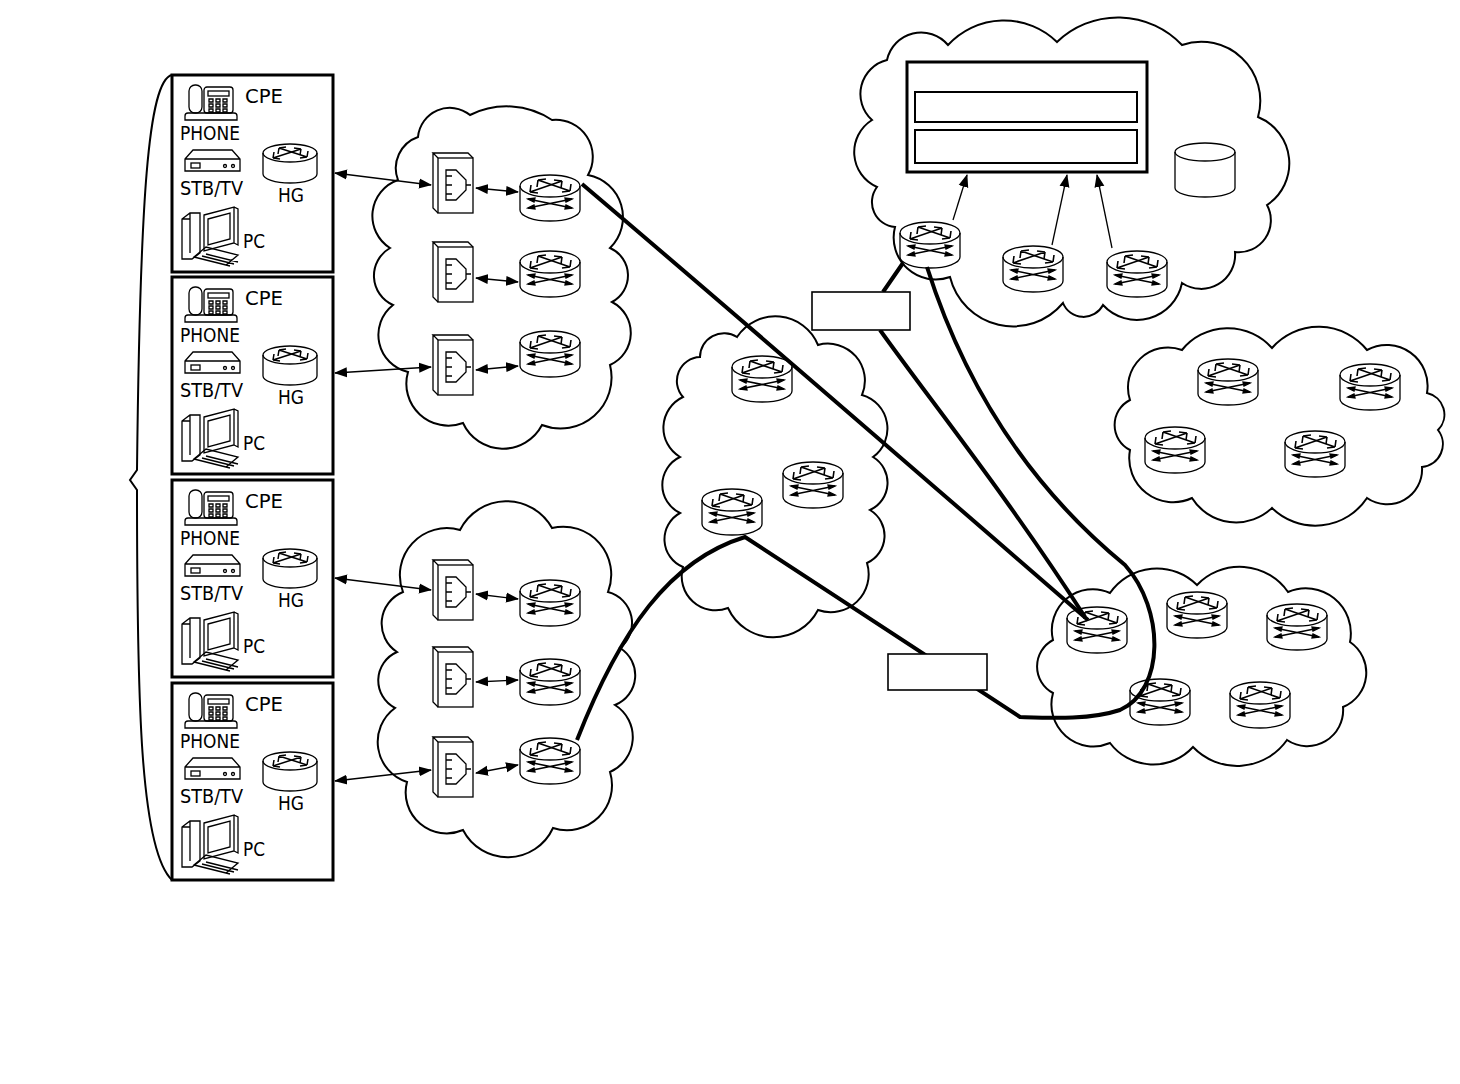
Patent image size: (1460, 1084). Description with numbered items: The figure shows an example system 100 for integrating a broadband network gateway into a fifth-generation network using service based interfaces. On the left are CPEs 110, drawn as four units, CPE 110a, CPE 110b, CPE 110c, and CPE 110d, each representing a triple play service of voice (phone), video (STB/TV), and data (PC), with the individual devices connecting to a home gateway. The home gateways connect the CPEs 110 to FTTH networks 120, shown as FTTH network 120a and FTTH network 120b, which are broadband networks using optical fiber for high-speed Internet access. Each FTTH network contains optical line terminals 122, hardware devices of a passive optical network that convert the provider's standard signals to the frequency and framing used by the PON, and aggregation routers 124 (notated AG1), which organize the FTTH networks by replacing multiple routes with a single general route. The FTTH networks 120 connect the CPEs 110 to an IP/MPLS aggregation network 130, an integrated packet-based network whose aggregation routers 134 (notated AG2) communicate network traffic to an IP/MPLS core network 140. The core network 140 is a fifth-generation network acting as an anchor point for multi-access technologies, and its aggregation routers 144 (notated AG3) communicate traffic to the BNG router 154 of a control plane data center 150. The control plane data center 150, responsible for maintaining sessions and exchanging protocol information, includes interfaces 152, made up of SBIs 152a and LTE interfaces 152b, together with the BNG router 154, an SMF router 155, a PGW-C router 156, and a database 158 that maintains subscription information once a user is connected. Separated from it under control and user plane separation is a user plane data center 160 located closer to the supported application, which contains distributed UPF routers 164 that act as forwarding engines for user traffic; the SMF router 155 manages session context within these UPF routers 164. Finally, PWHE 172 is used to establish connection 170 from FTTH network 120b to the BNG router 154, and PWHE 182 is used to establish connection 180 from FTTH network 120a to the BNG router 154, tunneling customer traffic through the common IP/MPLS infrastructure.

The system 100 is at (1302, 122).
The CPEs 110 is at (206, 477).
The CPE 110a is at (325, 106).
The CPE 110b is at (325, 308).
The CPE 110c is at (325, 511).
The CPE 110d is at (325, 714).
The FTTH networks 120 is at (403, 430).
The FTTH network 120a is at (528, 168).
The FTTH network 120b is at (528, 575).
The optical line terminals 122 is at (432, 157).
The aggregation routers 124 is at (587, 184).
The IP/MPLS aggregation network 130 is at (777, 627).
The aggregation routers 134 is at (770, 350).
The IP/MPLS core network 140 is at (1172, 757).
The aggregation routers 144 is at (1300, 707).
The control plane data center 150 is at (878, 75).
The interfaces 152 is at (1100, 88).
The SBIs 152a is at (1070, 120).
The LTE interfaces 152b is at (1127, 156).
The BNG router 154 is at (903, 246).
The SMF router 155 is at (1062, 278).
The PGW-C router 156 is at (1167, 266).
The database 158 is at (1205, 147).
The user plane data center 160 is at (1370, 312).
The UPF routers 164 is at (1353, 454).
The connection 170 is at (1015, 718).
The PWHE 172 is at (980, 682).
The connection 180 is at (652, 248).
The PWHE 182 is at (904, 322).